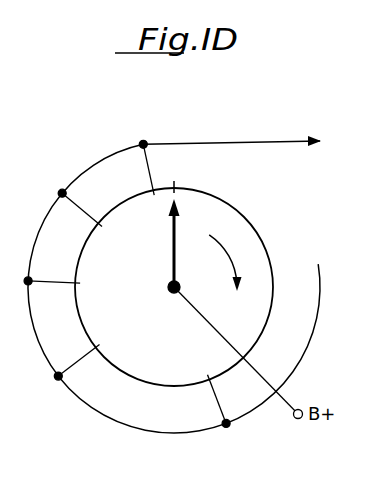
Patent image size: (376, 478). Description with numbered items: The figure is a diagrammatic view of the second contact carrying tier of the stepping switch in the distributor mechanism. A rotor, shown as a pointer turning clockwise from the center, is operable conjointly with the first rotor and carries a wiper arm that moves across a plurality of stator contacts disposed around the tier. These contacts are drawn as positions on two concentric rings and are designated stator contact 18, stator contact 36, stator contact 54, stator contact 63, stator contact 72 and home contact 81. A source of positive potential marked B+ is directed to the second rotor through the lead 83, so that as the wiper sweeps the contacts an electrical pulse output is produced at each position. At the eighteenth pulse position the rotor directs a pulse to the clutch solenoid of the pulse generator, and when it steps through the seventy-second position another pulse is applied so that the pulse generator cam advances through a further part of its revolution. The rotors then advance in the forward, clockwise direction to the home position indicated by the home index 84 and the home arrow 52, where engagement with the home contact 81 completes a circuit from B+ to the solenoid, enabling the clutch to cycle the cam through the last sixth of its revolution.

The stator contact 18 is at (266, 265).
The stator contact 36 is at (227, 413).
The home direction arrow 52 is at (266, 139).
The stator contact 54 is at (64, 370).
The stator contact 63 is at (52, 273).
The stator contact 72 is at (69, 198).
The home contact 81 is at (144, 156).
The lead 83 is at (282, 394).
The home index mark 84 is at (173, 175).